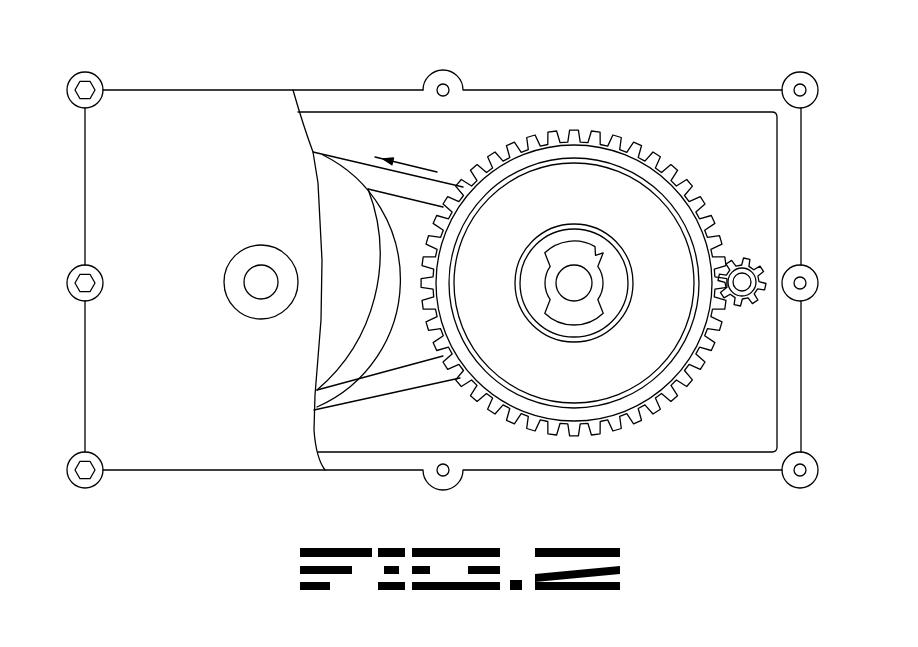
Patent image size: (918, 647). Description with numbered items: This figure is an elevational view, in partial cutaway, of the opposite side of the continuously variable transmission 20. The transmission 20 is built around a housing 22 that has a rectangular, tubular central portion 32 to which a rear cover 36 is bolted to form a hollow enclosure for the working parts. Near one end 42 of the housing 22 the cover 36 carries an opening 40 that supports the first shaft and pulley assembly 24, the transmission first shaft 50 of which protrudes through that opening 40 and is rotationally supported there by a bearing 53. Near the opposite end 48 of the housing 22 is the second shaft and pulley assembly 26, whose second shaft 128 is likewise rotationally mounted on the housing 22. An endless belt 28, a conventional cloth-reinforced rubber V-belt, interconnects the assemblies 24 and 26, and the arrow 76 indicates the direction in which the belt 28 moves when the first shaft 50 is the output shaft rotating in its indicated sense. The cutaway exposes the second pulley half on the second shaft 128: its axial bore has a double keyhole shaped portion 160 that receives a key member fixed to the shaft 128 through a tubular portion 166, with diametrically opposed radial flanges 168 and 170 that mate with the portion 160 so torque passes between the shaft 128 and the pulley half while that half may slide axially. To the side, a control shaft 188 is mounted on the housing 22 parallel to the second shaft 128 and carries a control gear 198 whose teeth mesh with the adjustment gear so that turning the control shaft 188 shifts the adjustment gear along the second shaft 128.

The continuously variable transmission 20 is at (513, 78).
The housing 22 is at (641, 101).
The first shaft and pulley assembly 24 is at (324, 168).
The second shaft and pulley assembly 26 is at (655, 163).
The endless belt 28 is at (362, 172).
The central portion 32 is at (597, 108).
The rear cover 36 is at (226, 188).
The opening 40 is at (232, 282).
The one end 42 is at (76, 196).
The opposite end 48 is at (812, 188).
The transmission first shaft 50 is at (263, 290).
The bearing 53 is at (238, 298).
The direction of belt movement 76 is at (415, 168).
The second shaft 128 is at (578, 288).
The double keyhole shaped portion 160 is at (594, 249).
The tubular portion 166 is at (595, 288).
The flange 168 is at (565, 248).
The flange 170 is at (567, 318).
The control shaft 188 is at (740, 280).
The control gear 198 is at (748, 262).